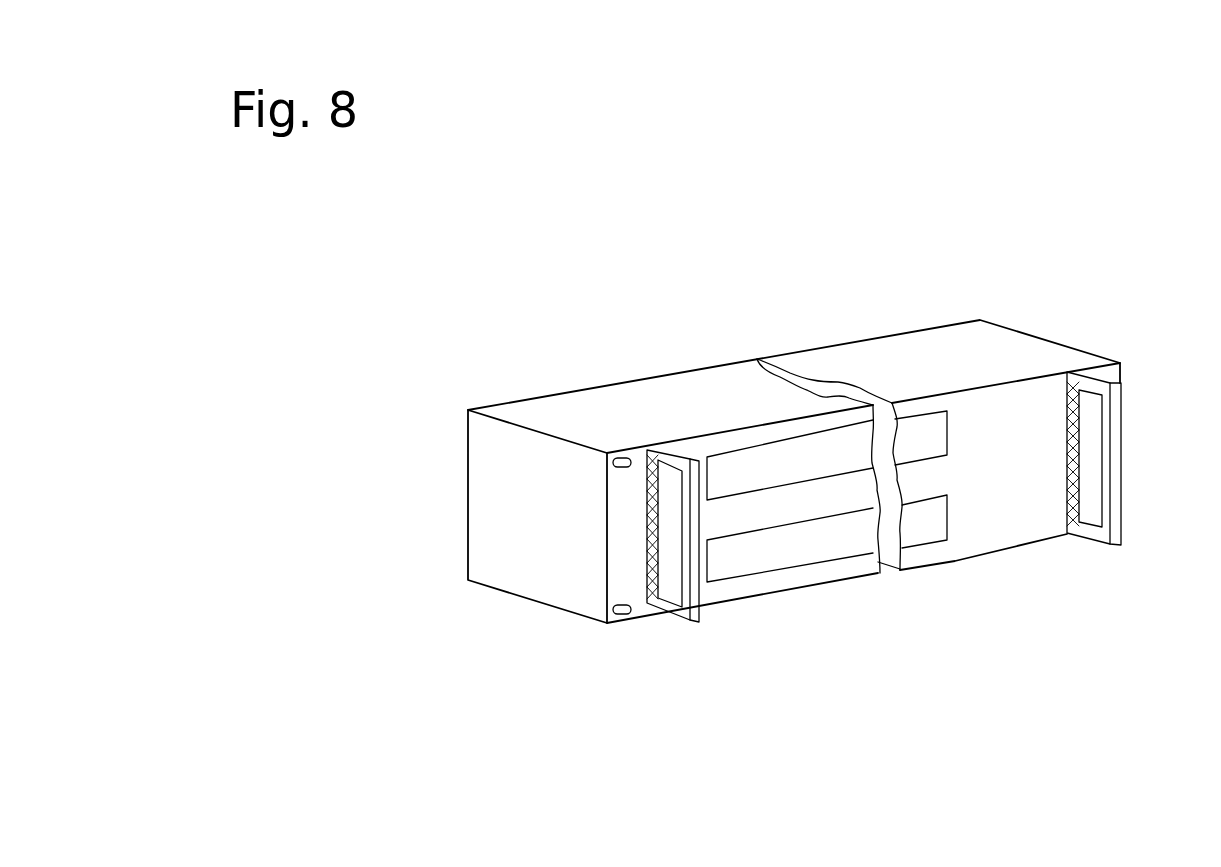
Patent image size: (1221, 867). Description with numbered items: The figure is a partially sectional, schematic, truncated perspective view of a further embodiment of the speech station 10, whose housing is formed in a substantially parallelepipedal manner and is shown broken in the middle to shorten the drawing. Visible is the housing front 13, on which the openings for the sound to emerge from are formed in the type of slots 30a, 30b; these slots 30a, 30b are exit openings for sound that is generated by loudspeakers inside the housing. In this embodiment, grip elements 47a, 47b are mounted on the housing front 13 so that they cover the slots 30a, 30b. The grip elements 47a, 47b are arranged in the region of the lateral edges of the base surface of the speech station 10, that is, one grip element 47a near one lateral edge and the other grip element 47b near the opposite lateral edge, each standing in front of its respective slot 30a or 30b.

The speech station 10 is at (907, 250).
The housing front 13 is at (975, 524).
The slot 30a is at (648, 598).
The slot 30b is at (1068, 525).
The grip element 47a is at (688, 580).
The grip element 47b is at (1098, 502).